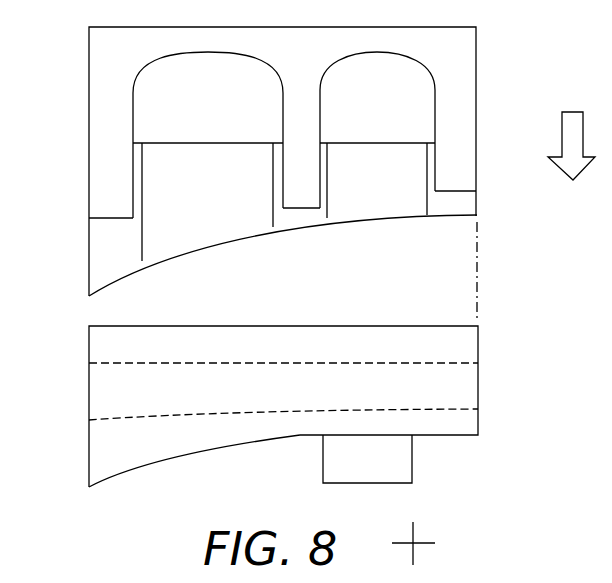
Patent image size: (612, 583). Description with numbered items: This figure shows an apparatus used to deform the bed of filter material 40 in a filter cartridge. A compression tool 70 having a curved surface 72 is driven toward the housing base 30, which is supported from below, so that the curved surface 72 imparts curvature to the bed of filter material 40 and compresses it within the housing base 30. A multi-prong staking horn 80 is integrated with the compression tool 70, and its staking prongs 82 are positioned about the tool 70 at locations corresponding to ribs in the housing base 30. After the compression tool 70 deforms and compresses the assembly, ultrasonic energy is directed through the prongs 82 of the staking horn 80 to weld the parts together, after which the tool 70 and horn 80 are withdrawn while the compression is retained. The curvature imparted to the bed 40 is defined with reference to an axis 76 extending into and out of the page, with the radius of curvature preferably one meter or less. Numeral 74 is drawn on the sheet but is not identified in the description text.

The multi-prong staking horn 80 is at (472, 42).
The staking prongs 82 is at (457, 110).
The curved contact surface 74 is at (100, 262).
The curved surface 72 is at (205, 245).
The compression tool 70 is at (380, 200).
The housing base 30 is at (478, 343).
The bed of filter material 40 is at (437, 409).
The axis 76 is at (427, 540).